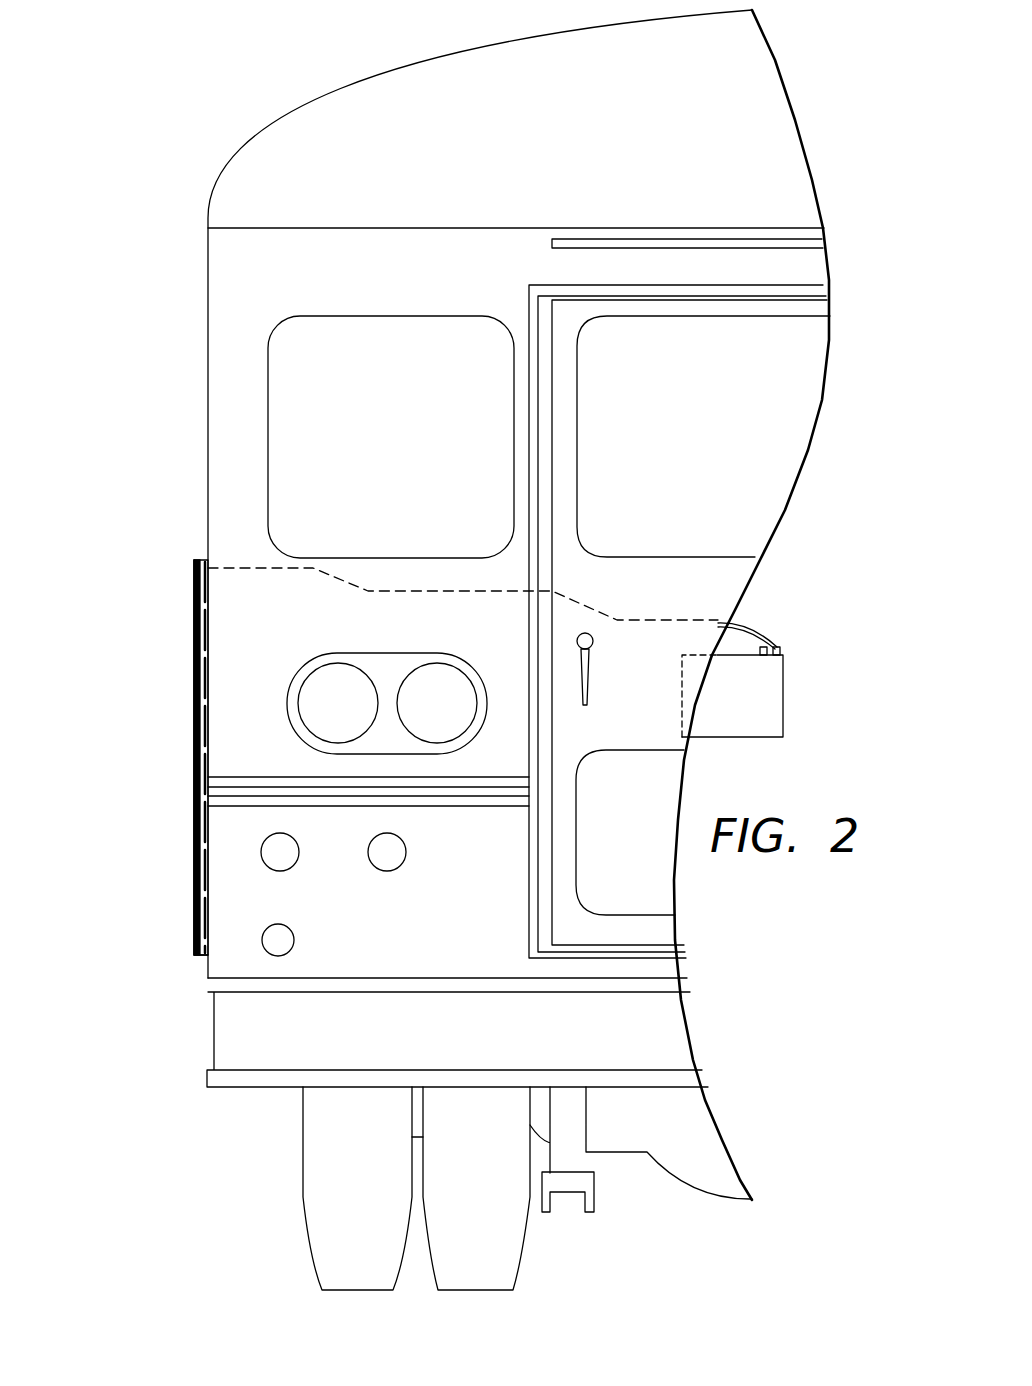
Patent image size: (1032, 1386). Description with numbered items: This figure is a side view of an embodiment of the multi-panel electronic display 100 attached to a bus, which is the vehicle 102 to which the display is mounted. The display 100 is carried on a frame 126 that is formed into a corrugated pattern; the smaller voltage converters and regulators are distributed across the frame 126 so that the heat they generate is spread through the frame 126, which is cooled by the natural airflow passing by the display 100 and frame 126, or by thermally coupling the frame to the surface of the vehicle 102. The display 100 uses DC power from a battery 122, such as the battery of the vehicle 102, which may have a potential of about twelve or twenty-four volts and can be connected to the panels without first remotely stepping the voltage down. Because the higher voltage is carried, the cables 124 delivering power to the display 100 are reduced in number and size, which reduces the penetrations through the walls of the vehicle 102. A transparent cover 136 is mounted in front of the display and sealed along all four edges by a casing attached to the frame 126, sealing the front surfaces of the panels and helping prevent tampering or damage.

The multi-panel electronic display 100 is at (432, 650).
The vehicle 102 is at (208, 298).
The battery 122 is at (775, 697).
The cables 124 is at (753, 625).
The frame 126 is at (214, 688).
The transparent cover 136 is at (196, 833).